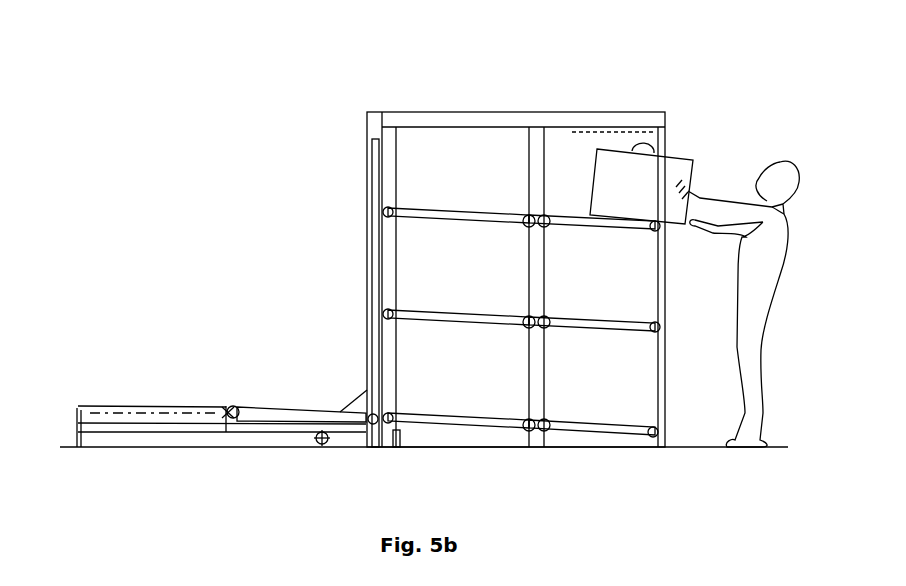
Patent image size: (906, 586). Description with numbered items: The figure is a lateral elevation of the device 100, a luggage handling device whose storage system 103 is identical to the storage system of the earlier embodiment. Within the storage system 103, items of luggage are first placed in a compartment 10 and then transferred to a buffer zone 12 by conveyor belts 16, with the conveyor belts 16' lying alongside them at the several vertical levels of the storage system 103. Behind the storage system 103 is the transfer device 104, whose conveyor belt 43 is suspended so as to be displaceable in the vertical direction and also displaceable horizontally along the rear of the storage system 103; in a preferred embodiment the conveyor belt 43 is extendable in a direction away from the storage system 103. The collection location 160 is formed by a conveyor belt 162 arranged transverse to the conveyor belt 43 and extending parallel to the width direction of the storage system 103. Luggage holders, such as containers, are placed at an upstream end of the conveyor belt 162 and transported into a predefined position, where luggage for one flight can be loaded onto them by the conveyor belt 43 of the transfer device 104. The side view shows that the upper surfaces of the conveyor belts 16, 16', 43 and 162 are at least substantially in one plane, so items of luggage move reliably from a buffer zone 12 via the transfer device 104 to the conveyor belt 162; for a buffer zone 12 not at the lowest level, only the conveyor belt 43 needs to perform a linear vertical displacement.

The device 100 is at (110, 141).
The storage system 103 is at (681, 78).
The transfer device 104 is at (303, 332).
The conveyor belt 43 is at (280, 410).
The collection location 160 is at (109, 374).
The conveyor belt 162 is at (153, 405).
The compartment 10 is at (603, 375).
The buffer zone 12 is at (468, 361).
The conveyor belt 16 is at (594, 326).
The conveyor belt 16' is at (451, 319).